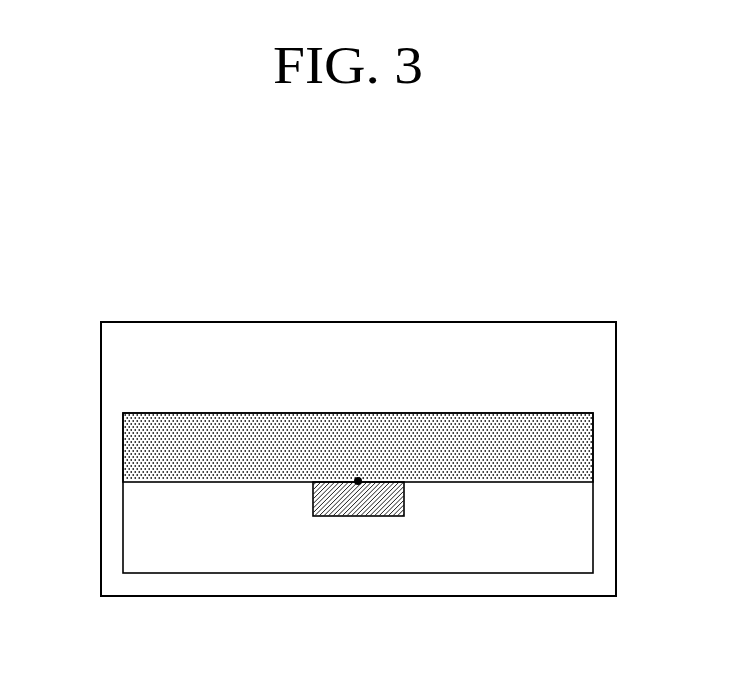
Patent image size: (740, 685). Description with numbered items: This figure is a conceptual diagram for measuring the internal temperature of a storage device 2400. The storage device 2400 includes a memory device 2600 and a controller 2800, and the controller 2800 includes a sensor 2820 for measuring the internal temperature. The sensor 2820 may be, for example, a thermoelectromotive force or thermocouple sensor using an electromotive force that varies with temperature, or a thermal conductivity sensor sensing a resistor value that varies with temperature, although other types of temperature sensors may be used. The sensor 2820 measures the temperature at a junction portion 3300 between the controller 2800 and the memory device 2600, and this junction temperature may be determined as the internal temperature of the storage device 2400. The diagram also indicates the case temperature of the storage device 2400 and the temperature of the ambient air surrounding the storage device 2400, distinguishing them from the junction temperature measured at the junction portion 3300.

The storage device 2400 is at (574, 260).
The memory device 2600 is at (583, 447).
The controller 2800 is at (445, 562).
The sensor 2820 is at (355, 517).
The junction portion 3300 is at (358, 474).